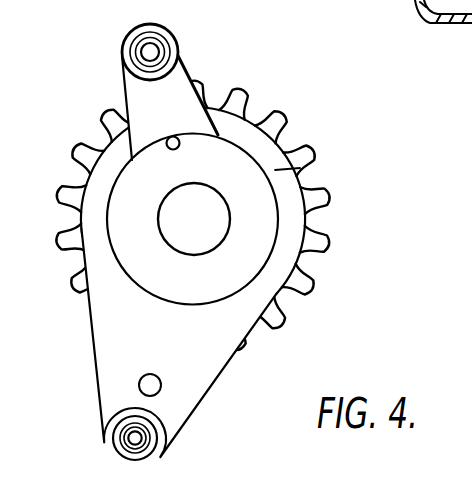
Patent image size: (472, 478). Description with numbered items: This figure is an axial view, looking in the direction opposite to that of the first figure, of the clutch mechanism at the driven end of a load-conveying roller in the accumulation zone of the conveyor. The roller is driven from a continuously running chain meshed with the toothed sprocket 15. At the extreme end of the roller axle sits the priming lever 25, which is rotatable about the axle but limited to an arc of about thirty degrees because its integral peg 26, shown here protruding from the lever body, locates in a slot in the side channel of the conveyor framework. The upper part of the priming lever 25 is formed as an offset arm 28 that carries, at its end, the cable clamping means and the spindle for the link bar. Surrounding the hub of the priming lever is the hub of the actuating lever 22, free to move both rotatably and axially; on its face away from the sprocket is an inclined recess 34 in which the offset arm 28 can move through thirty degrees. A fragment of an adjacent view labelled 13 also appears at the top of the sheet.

The belt 13 is at (415, 8).
The sprocket 15 is at (218, 215).
The actuating lever 22 is at (303, 242).
The priming lever 25 is at (250, 208).
The peg 26 is at (179, 141).
The offset arm 28 is at (178, 83).
The inclined recess 34 is at (275, 195).